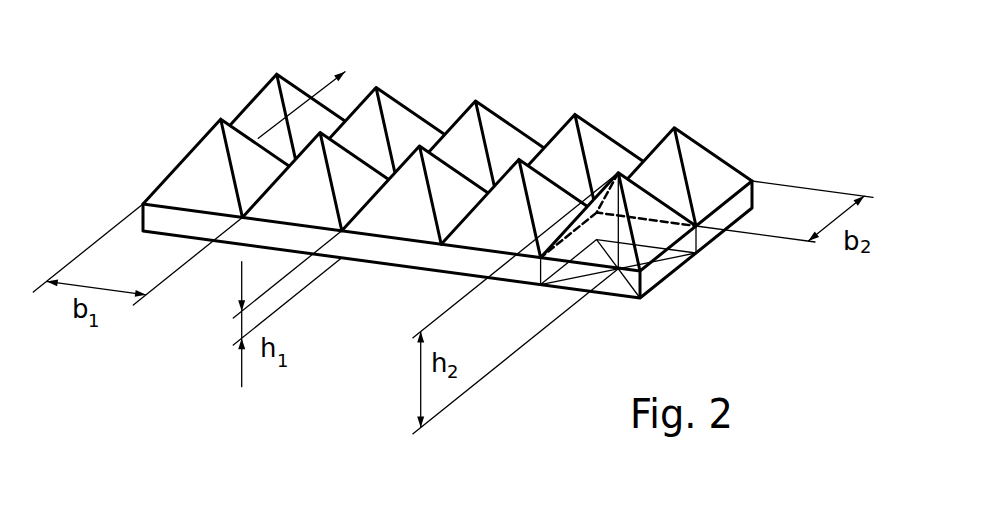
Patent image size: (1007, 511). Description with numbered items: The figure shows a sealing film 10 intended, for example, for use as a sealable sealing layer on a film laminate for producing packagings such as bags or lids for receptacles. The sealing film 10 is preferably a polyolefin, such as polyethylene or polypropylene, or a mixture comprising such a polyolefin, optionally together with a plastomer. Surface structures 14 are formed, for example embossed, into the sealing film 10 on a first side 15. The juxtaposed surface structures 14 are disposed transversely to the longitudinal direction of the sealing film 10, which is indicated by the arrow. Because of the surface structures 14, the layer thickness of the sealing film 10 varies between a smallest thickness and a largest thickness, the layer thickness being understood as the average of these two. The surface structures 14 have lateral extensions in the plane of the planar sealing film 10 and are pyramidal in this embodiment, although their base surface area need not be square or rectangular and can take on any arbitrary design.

The sealing film 10 is at (429, 222).
The surface structures 14 is at (585, 95).
The first side 15 is at (185, 209).